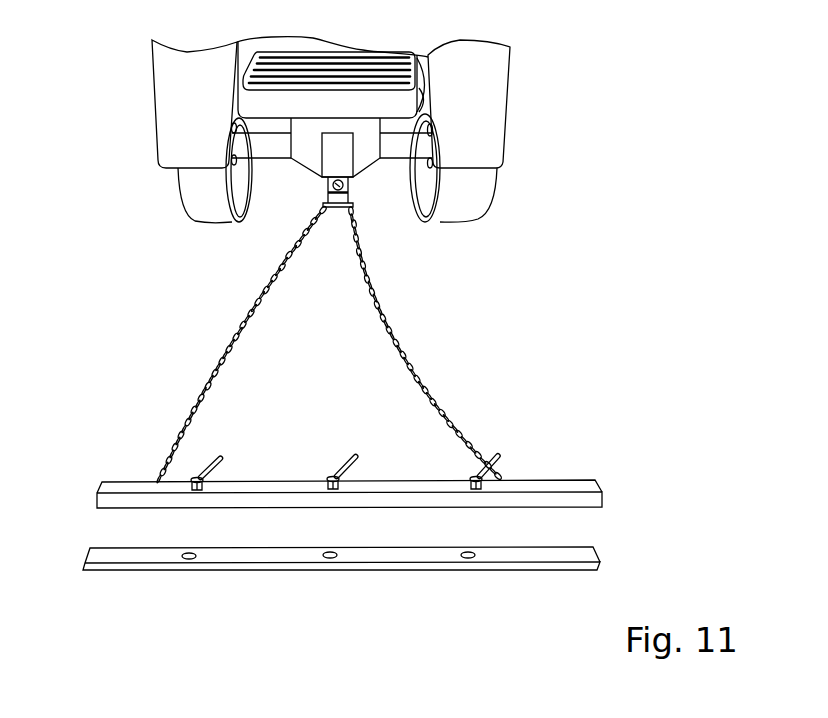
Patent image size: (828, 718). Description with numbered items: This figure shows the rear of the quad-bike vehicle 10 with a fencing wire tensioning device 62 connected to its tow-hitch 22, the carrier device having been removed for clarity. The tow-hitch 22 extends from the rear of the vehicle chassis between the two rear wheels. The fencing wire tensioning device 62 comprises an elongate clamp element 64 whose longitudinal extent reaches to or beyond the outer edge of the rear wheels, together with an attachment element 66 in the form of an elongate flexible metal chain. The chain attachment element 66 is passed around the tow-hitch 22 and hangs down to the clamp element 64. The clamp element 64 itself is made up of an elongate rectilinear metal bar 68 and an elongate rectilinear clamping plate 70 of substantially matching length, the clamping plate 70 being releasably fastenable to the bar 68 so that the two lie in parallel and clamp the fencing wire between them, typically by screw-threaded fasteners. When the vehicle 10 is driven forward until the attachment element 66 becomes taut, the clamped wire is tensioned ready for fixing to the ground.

The quad-bike vehicle 10 is at (388, 160).
The tow-hitch 22 is at (328, 188).
The attachment element 66 is at (388, 328).
The fencing wire tensioning device 62 is at (329, 456).
The elongate rectilinear metal bar 68 is at (137, 480).
The elongate clamp element 64 is at (321, 601).
The elongate rectilinear clamping plate 70 is at (110, 572).